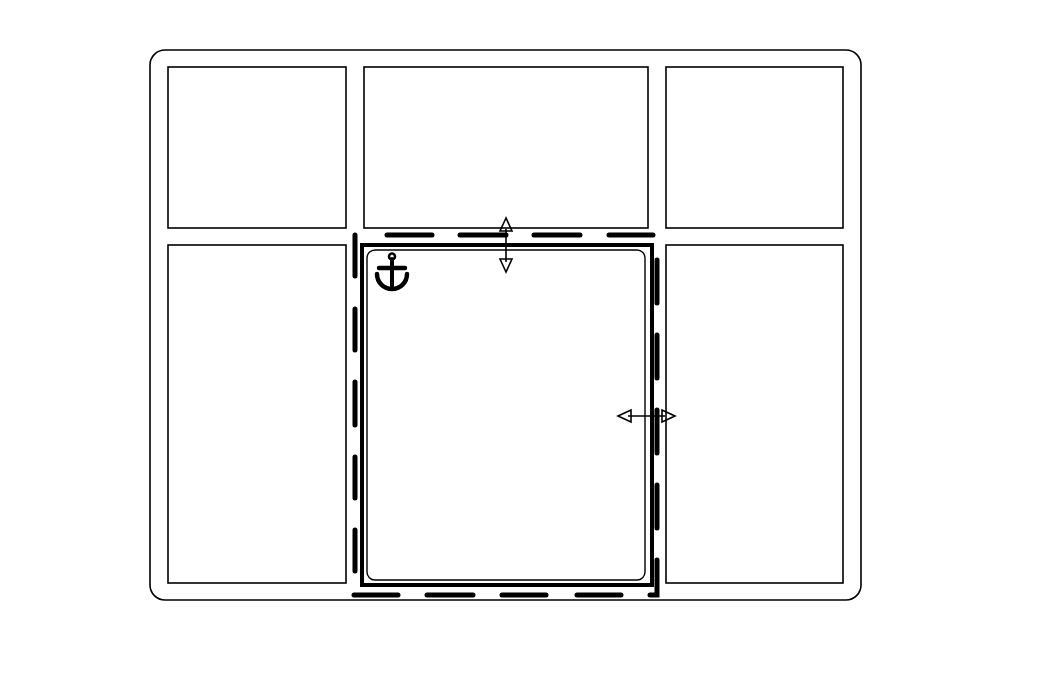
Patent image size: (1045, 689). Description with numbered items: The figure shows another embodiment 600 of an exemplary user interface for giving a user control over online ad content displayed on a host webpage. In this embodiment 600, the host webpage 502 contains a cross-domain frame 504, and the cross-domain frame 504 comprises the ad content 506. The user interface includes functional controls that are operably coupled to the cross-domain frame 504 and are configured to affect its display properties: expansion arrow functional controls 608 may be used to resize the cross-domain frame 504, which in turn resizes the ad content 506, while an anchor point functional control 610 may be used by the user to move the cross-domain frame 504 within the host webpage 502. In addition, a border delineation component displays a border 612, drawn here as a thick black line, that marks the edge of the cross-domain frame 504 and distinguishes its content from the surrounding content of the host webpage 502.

The embodiment of the exemplary user interface 600 is at (186, 33).
The host webpage 502 is at (825, 50).
The cross-domain frame 504 is at (352, 414).
The ad content 506 is at (507, 415).
The expansion arrow functional controls 608 is at (500, 224).
The anchor point functional control 610 is at (388, 284).
The border 612 is at (655, 523).